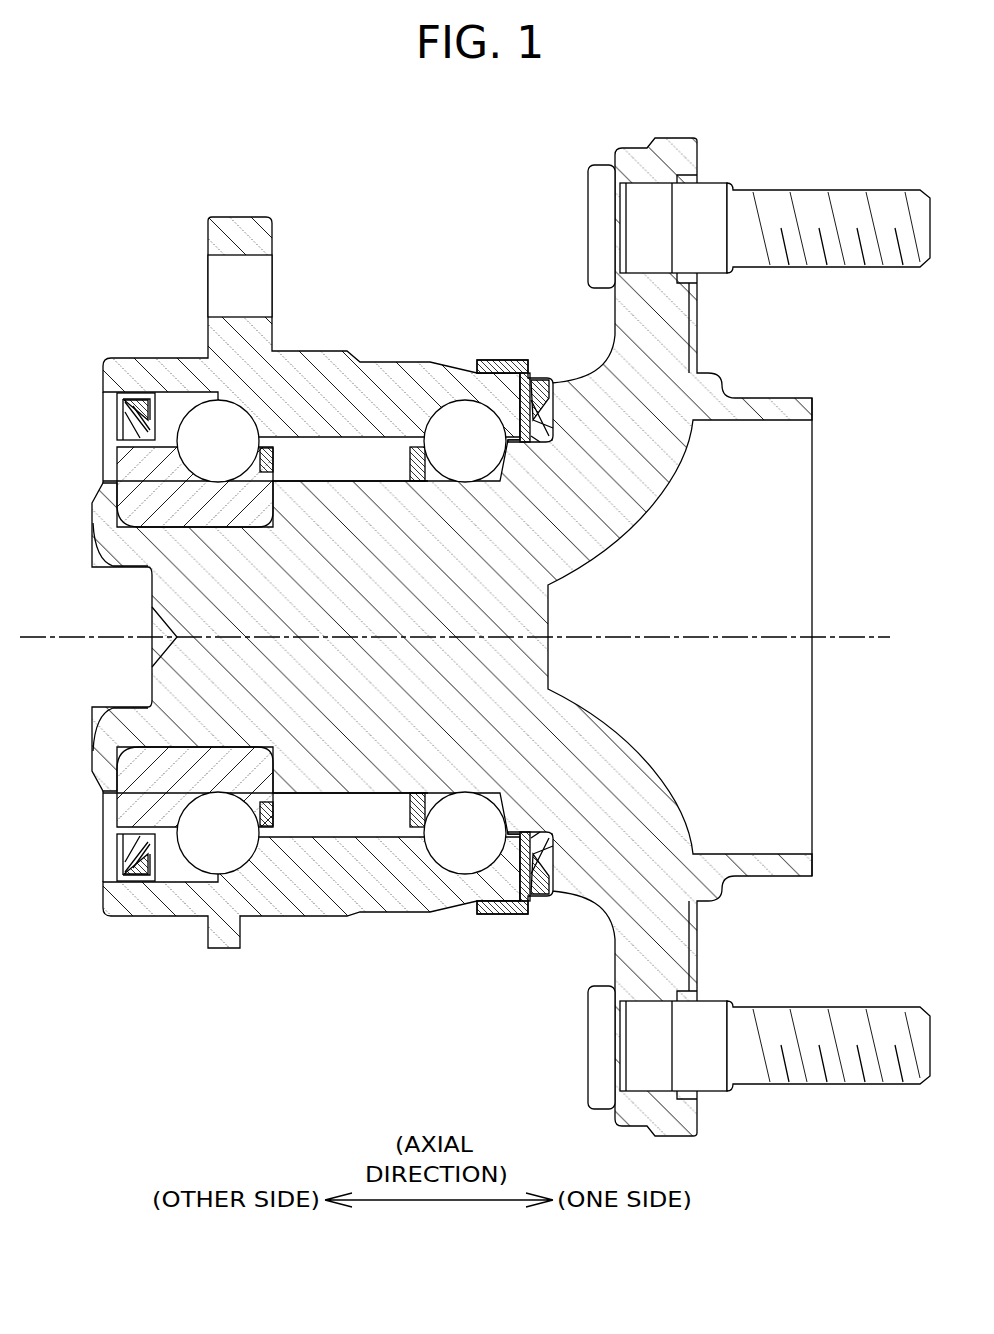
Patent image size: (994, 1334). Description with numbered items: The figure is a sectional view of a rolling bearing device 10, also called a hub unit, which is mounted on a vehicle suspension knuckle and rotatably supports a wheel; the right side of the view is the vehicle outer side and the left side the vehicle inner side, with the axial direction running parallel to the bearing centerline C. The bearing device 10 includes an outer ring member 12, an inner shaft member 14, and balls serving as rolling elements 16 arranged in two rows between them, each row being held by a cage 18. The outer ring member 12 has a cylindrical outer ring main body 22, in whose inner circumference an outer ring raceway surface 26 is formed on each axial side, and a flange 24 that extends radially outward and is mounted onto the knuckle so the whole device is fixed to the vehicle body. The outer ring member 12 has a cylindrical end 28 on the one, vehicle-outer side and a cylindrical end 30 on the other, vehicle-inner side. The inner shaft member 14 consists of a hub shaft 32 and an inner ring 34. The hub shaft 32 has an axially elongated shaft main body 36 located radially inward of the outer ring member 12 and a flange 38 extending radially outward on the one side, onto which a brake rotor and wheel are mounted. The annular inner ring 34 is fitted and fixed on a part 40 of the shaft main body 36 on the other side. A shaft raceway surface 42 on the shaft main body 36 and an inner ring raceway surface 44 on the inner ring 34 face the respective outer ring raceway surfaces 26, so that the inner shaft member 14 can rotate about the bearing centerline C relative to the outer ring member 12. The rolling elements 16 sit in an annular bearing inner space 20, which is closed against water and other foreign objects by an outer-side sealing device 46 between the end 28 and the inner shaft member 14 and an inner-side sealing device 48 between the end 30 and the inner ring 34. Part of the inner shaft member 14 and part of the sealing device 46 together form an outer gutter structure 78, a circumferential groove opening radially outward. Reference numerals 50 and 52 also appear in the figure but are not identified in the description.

The rolling bearing device 10 is at (100, 355).
The outer ring member 12 is at (375, 358).
The inner shaft member 14 is at (650, 508).
The rolling elements 16 is at (196, 420).
The cage 18 is at (290, 436).
The bearing inner space 20 is at (357, 837).
The outer ring main body 22 is at (323, 370).
The flange 24 is at (243, 230).
The outer ring raceway surface 26 is at (227, 860).
The end of outer ring member on one side in axial direction 28 is at (492, 355).
The end of outer ring member on other side in axial direction 30 is at (148, 372).
The hub shaft 32 is at (470, 722).
The inner ring 34 is at (145, 806).
The shaft main body 36 is at (345, 568).
The flange 38 is at (647, 333).
The part of shaft main body on other side in axial direction 40 is at (195, 553).
The shaft raceway surface 42 is at (482, 815).
The inner ring raceway surface 44 is at (197, 835).
The sealing device 46 is at (497, 355).
The sealing device 48 is at (132, 392).
The seal core metal 50 is at (512, 358).
The seal sliding surface 52 is at (533, 442).
The outer gutter structure 78 is at (535, 360).
The bearing centerline C is at (848, 630).